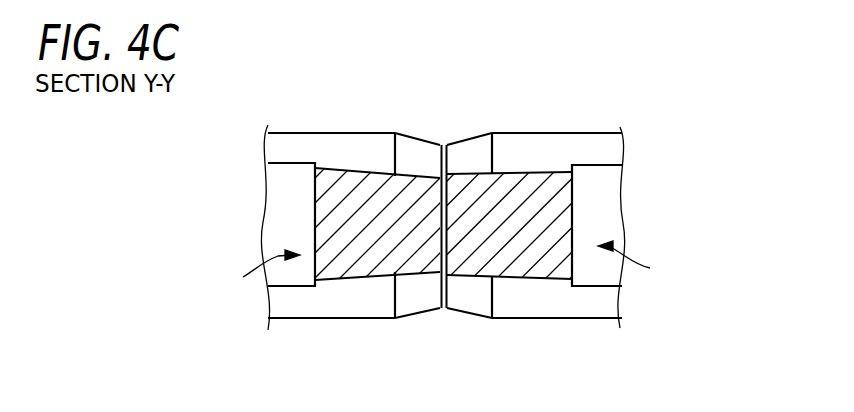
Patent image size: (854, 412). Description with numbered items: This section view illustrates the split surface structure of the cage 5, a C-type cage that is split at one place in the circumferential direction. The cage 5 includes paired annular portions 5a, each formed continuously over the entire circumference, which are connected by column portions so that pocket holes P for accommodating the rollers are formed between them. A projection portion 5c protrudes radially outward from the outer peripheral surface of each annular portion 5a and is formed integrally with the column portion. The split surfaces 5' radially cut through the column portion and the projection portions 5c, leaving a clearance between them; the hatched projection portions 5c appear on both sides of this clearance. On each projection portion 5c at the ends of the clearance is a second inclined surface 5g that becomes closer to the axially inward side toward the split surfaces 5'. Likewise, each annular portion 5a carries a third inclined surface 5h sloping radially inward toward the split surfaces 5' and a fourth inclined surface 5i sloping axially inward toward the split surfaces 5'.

The cage 5 is at (476, 206).
The annular portion 5a is at (299, 152).
The projection portion 5c is at (372, 205).
The second inclined surface 5g is at (517, 173).
The third inclined surface 5h is at (470, 162).
The fourth inclined surface 5i is at (441, 144).
The split surface 5' is at (510, 197).
The pocket hole P is at (448, 263).